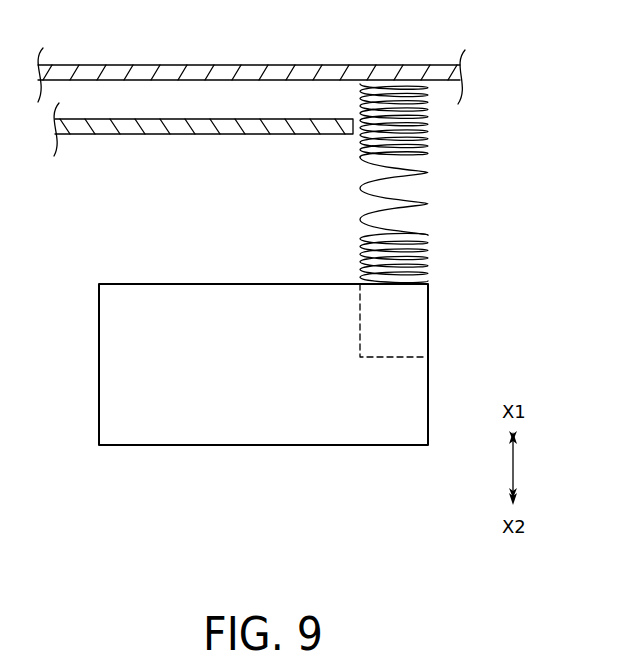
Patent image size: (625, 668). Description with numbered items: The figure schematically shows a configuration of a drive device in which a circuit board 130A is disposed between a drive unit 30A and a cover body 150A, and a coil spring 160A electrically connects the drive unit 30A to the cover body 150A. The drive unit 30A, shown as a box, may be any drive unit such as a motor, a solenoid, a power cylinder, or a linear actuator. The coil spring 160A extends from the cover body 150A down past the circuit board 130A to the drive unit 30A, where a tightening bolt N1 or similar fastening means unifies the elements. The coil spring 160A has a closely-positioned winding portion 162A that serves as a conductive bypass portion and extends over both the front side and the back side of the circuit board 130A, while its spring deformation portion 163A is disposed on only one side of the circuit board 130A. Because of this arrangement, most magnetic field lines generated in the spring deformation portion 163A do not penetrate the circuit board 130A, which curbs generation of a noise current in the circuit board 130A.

The cover body 150A is at (190, 71).
The circuit board 130A is at (153, 132).
The coil spring 160A is at (452, 183).
The closely-positioned winding portion 162A is at (430, 118).
The spring deformation portion 163A is at (430, 187).
The drive unit 30A is at (99, 355).
The tightening bolt N1 is at (412, 317).